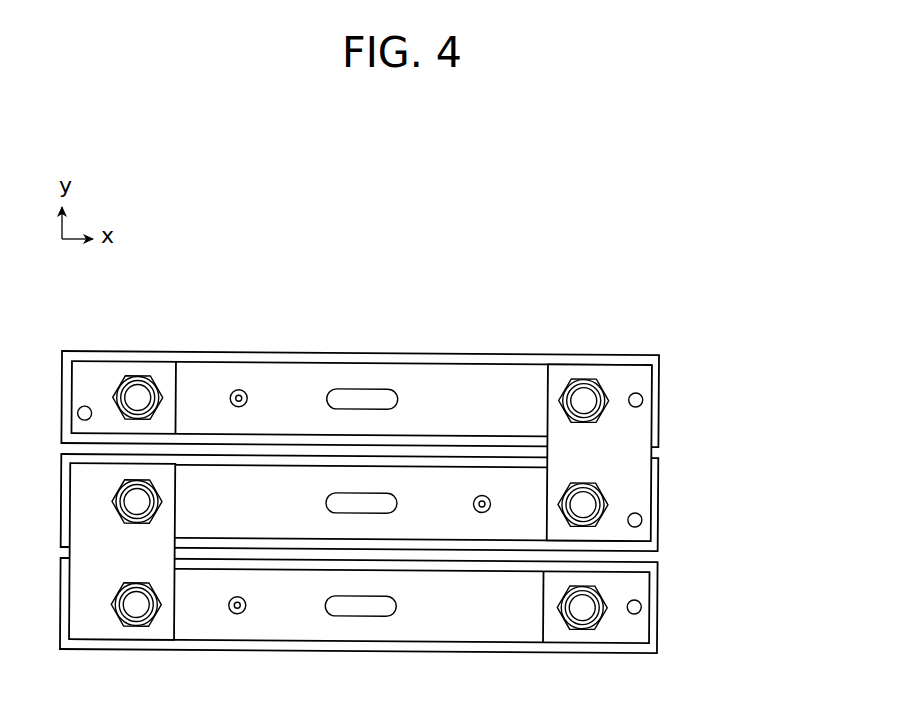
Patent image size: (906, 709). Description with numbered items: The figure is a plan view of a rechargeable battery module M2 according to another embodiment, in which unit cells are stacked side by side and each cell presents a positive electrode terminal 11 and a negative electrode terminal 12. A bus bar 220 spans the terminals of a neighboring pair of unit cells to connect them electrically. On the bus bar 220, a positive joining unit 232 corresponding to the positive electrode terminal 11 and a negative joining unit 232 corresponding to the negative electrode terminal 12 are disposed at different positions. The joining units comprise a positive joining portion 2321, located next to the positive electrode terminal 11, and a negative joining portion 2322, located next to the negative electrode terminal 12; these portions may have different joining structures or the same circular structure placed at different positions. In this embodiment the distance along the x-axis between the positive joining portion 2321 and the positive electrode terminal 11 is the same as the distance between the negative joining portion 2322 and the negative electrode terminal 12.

The rechargeable battery module M2 is at (503, 230).
The positive electrode terminal 11 is at (583, 397).
The negative electrode terminal 12 is at (137, 395).
The bus bar 220 is at (546, 406).
The joining unit 232 is at (717, 460).
The positive joining portion 2321 is at (650, 404).
The negative joining portion 2322 is at (650, 513).